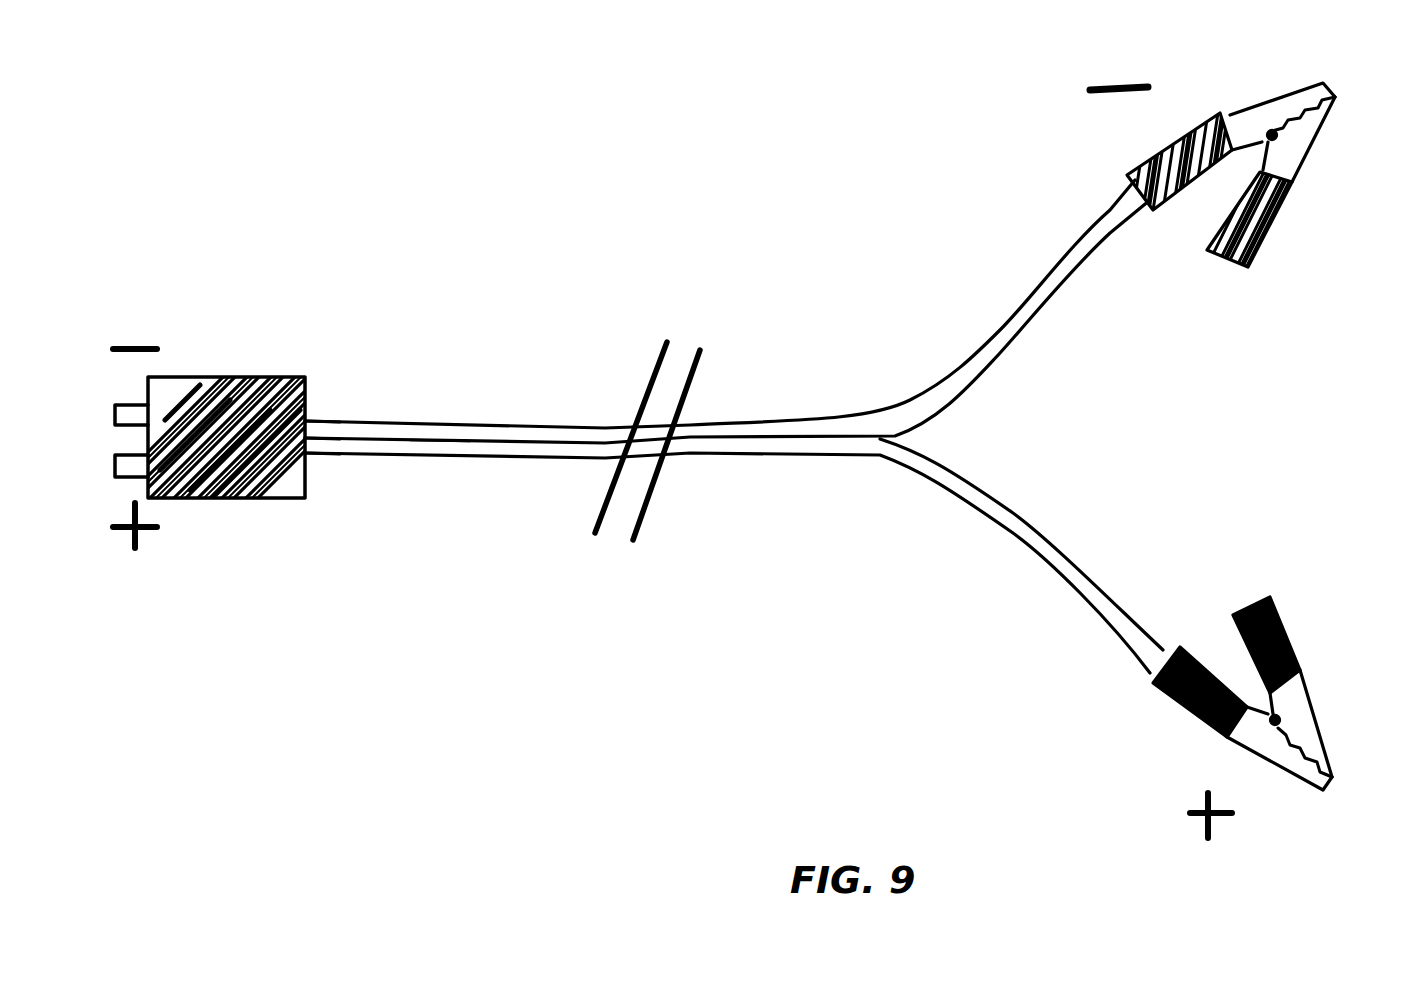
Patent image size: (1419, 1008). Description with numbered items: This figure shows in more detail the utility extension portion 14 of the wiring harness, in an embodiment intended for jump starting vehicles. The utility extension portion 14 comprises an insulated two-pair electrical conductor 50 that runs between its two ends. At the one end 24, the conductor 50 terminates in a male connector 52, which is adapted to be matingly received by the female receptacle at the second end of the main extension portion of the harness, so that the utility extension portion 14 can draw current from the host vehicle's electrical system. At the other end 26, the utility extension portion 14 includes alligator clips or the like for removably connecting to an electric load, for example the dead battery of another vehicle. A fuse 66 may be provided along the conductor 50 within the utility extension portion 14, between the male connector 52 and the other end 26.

The utility extension portion 14 is at (502, 275).
The one end 24 is at (327, 393).
The other end 26 is at (1250, 395).
The insulated two-pair electrical conductor 50 is at (790, 420).
The male connector 52 is at (237, 377).
The fuse 66 is at (452, 448).